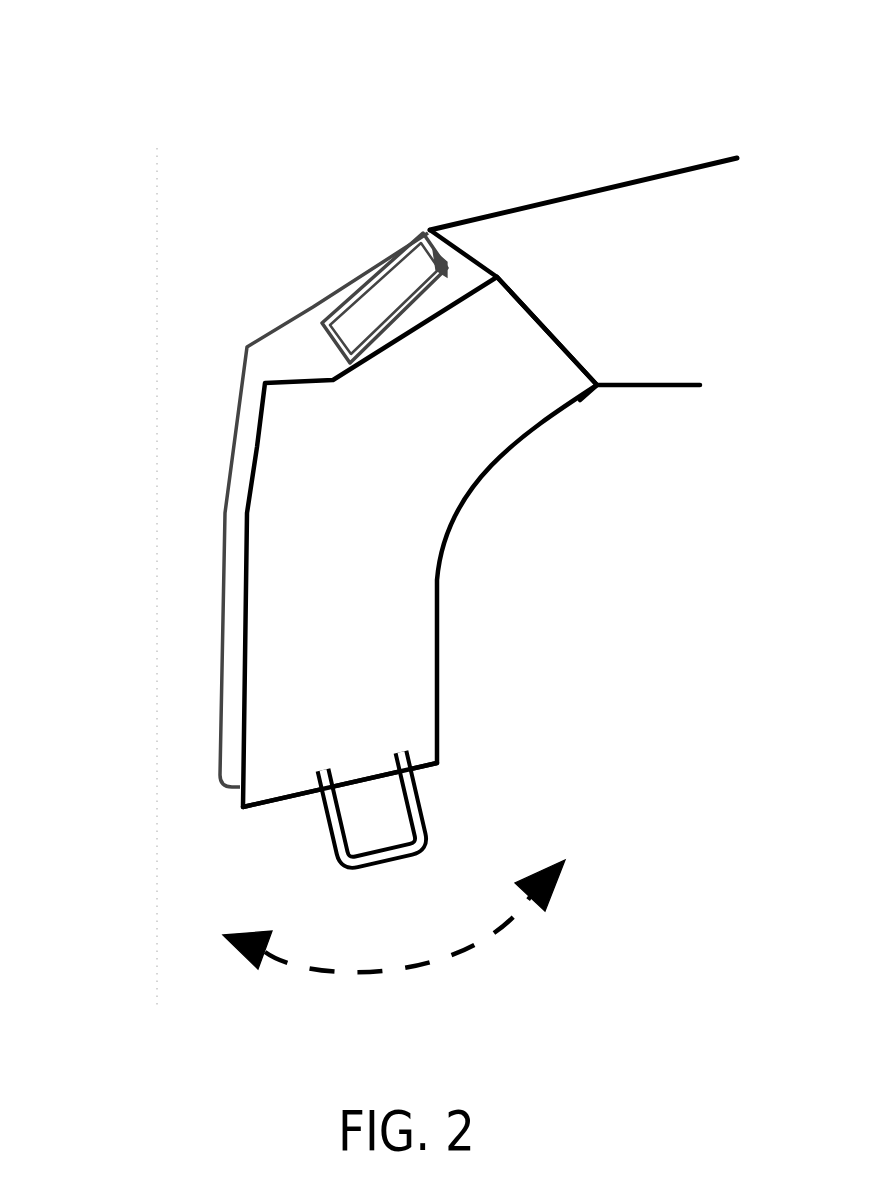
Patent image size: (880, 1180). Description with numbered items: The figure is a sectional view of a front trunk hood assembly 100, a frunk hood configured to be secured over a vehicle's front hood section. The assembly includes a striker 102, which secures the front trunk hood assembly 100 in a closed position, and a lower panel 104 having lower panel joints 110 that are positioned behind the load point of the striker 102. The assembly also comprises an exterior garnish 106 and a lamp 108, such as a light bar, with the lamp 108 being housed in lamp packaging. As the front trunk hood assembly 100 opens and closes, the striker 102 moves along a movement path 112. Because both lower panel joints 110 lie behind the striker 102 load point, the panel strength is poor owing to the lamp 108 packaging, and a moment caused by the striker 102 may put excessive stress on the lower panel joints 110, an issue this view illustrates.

The front trunk hood assembly 100 is at (425, 41).
The striker 102 is at (464, 815).
The lower panel 104 is at (305, 615).
The exterior garnish 106 is at (180, 528).
The lamp 108 is at (336, 292).
The lower panel joints 110 is at (540, 272).
The movement path 112 is at (460, 943).